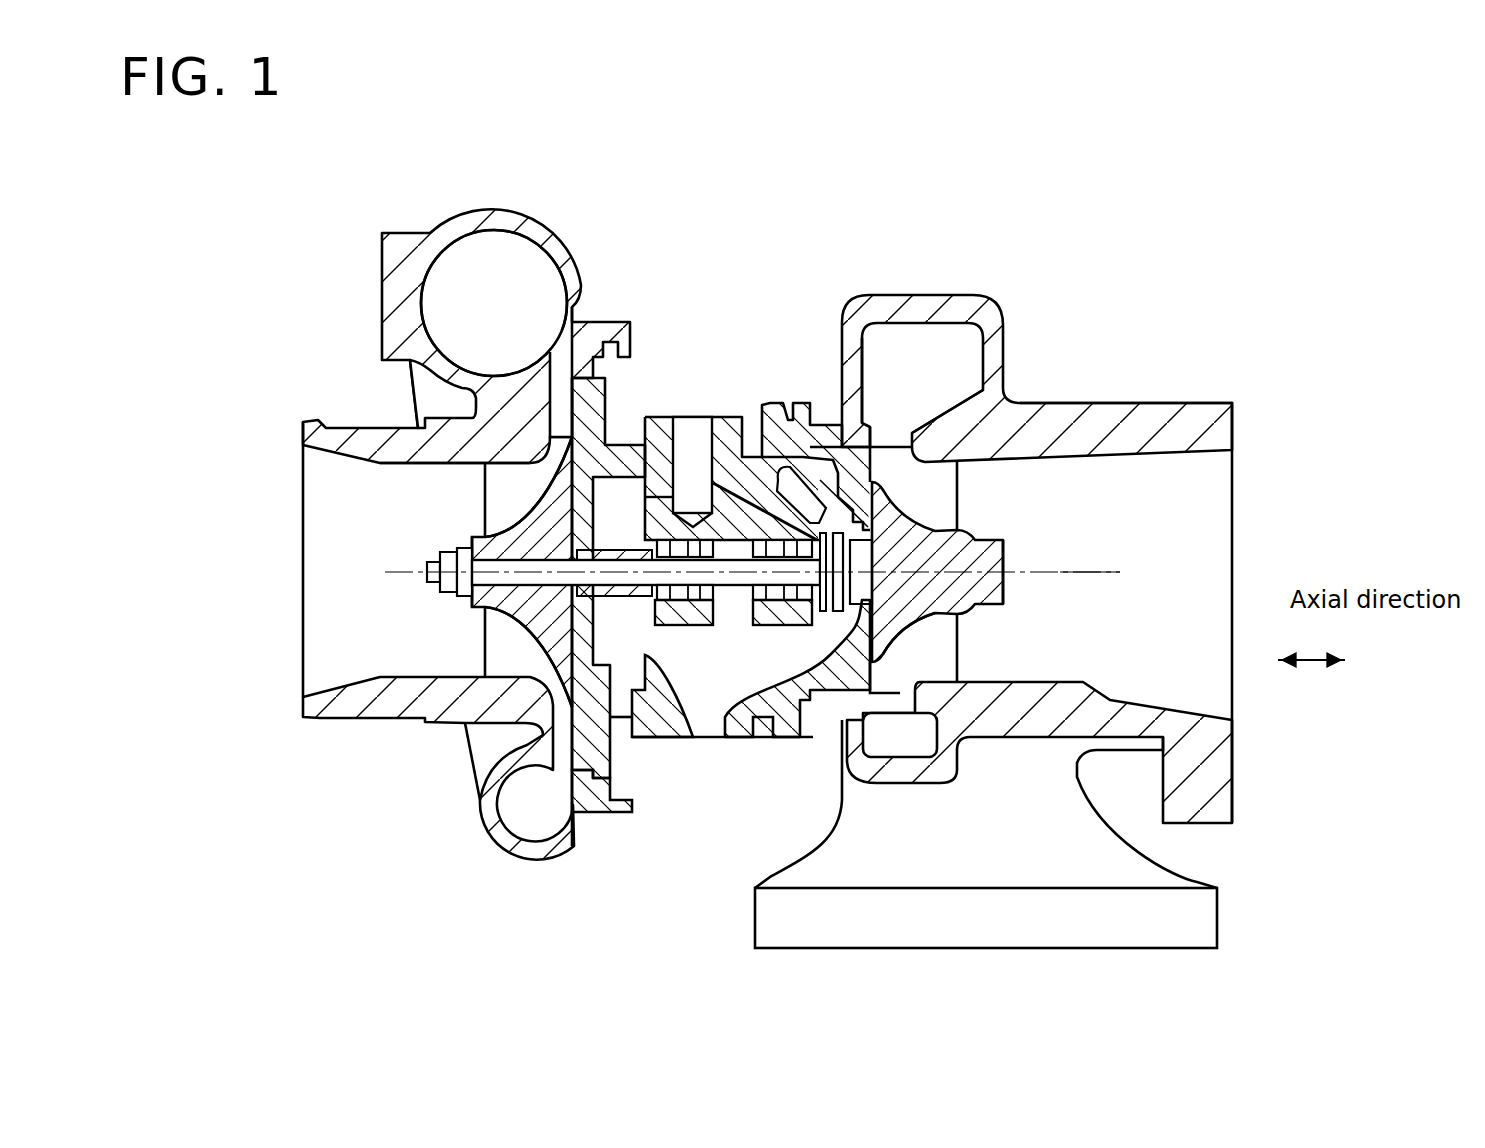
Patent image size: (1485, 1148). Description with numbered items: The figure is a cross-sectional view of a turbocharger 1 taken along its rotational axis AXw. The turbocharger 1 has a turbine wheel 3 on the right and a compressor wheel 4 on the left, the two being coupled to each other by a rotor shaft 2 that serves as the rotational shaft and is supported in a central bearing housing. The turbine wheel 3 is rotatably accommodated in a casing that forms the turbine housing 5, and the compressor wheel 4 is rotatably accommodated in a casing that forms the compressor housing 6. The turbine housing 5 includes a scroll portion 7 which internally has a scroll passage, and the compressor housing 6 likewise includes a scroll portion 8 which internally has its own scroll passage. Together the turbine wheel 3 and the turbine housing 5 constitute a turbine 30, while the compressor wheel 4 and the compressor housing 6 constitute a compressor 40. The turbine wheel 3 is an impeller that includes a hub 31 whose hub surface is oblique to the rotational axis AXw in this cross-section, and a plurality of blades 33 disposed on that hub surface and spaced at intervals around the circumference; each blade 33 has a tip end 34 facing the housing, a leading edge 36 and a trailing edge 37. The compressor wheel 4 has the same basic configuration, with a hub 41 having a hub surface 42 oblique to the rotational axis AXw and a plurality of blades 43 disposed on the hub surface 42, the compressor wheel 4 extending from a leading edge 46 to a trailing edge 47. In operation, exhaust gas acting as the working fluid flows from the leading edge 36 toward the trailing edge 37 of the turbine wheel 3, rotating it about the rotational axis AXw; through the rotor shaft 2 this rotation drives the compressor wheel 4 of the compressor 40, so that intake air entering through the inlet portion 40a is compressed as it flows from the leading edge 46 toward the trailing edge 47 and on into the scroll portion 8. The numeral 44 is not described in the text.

The turbocharger 1 is at (746, 274).
The rotor shaft 2 is at (628, 582).
The turbine wheel 3 is at (972, 521).
The compressor wheel 4 is at (526, 632).
The turbine housing 5 is at (1160, 415).
The compressor housing 6 is at (338, 430).
The scroll portion 7 is at (917, 340).
The scroll portion 8 is at (490, 262).
The turbine 30 is at (1100, 260).
The hub 31 is at (950, 595).
The blades 33 is at (940, 657).
The tip end 34 is at (950, 420).
The leading edge 36 is at (883, 445).
The trailing edge 37 is at (960, 470).
The compressor 40 is at (343, 208).
The inlet portion 40a is at (330, 592).
The hub 41 is at (500, 595).
The hub surface 42 is at (540, 652).
The blades 43 is at (495, 528).
The shroud wall 44 is at (488, 470).
The leading edge 46 is at (500, 505).
The trailing edge 47 is at (575, 425).
The rotational axis AXw is at (1090, 575).